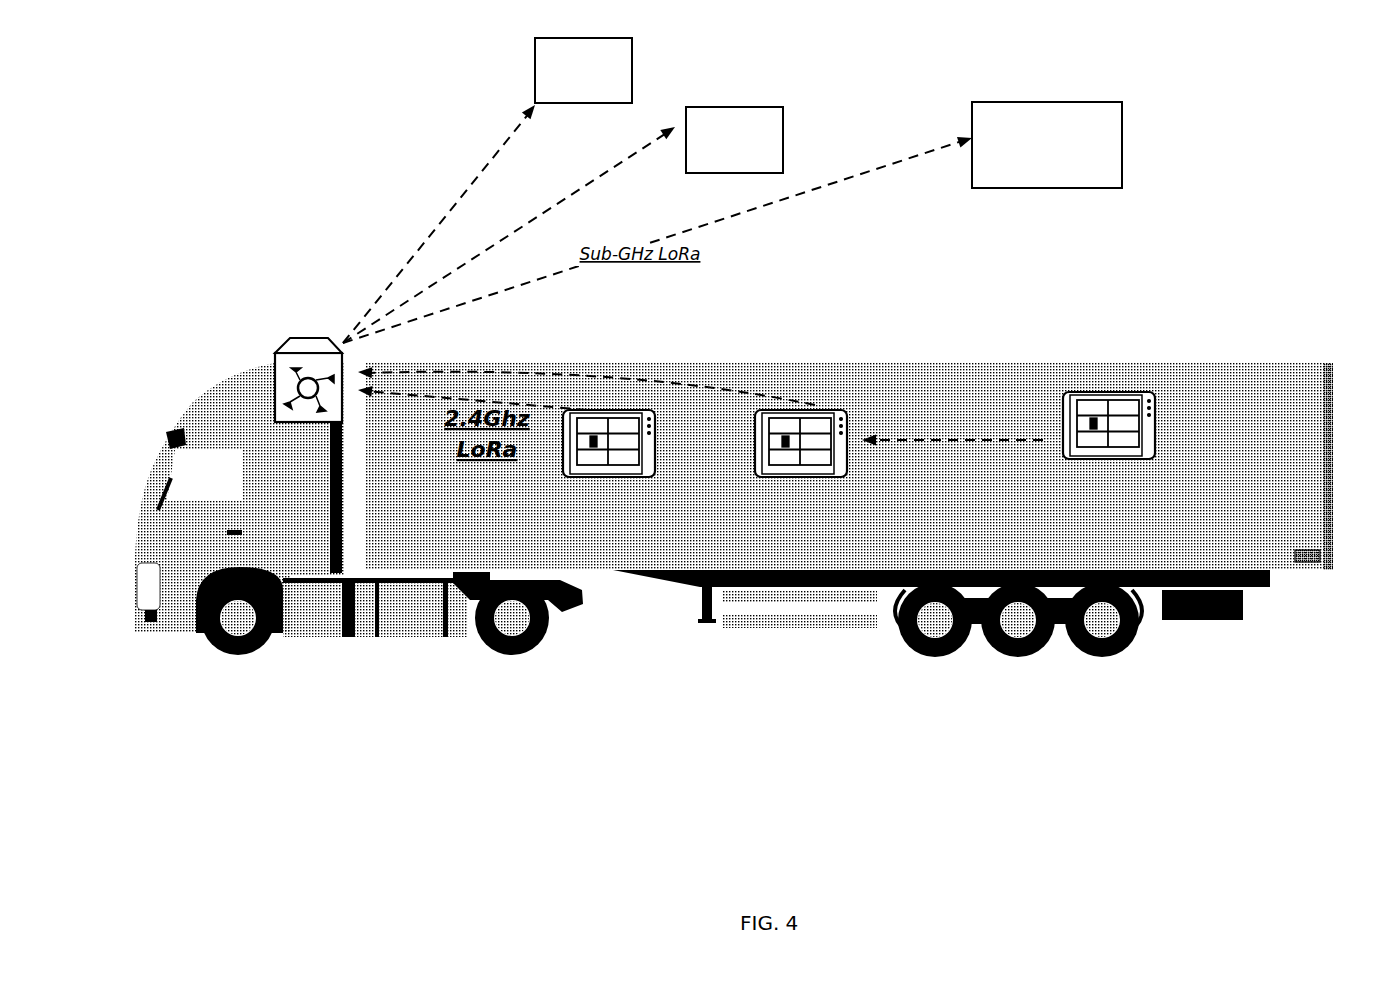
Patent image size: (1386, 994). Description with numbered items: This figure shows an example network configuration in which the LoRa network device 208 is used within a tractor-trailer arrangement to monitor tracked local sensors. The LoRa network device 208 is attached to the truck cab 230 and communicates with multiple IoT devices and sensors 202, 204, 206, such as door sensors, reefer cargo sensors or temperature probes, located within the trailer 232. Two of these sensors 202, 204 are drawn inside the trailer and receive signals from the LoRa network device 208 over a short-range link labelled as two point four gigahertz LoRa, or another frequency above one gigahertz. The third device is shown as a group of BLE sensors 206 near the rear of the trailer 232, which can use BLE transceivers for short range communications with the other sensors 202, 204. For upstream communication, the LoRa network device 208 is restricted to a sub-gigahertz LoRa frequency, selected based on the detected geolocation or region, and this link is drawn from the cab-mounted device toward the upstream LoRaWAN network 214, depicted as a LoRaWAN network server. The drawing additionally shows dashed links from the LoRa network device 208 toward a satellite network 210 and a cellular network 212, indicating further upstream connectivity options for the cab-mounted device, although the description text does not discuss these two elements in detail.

The sensor/IoT device 202 is at (648, 475).
The sensor/IoT device 204 is at (848, 460).
The sensor/IoT device 206 is at (1128, 403).
The LoRa network device 208 is at (275, 353).
The satellite network 210 is at (597, 48).
The cellular network 212 is at (758, 123).
The upstream LoRaWAN network 214 is at (990, 117).
The truck cab 230 is at (217, 403).
The trailer 232 is at (400, 525).